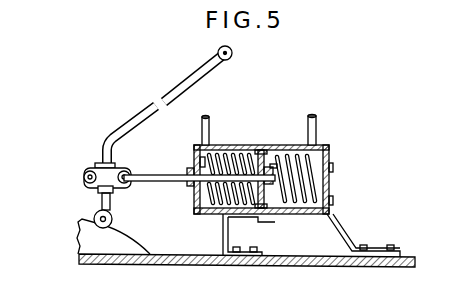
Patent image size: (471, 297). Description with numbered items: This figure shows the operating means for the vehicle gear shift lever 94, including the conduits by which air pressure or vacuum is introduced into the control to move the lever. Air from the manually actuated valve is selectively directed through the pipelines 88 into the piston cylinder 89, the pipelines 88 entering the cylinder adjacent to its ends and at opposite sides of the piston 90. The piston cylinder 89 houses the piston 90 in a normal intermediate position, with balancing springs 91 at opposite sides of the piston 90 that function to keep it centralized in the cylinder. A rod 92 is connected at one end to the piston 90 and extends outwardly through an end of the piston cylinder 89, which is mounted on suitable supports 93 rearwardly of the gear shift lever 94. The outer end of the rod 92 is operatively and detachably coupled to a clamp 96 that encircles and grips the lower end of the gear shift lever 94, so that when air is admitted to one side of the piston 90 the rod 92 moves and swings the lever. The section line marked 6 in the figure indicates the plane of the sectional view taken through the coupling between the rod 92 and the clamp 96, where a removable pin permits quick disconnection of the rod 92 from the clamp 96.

The section line 6- 6 is at (62, 141).
The pipelines 88 is at (210, 124).
The piston cylinder 89 is at (248, 147).
The piston 90 is at (264, 214).
The balancing springs 91 is at (202, 195).
The rod 92 is at (152, 181).
The supports 93 is at (345, 243).
The gear shift lever 94 is at (126, 131).
The clamp 96 is at (112, 170).